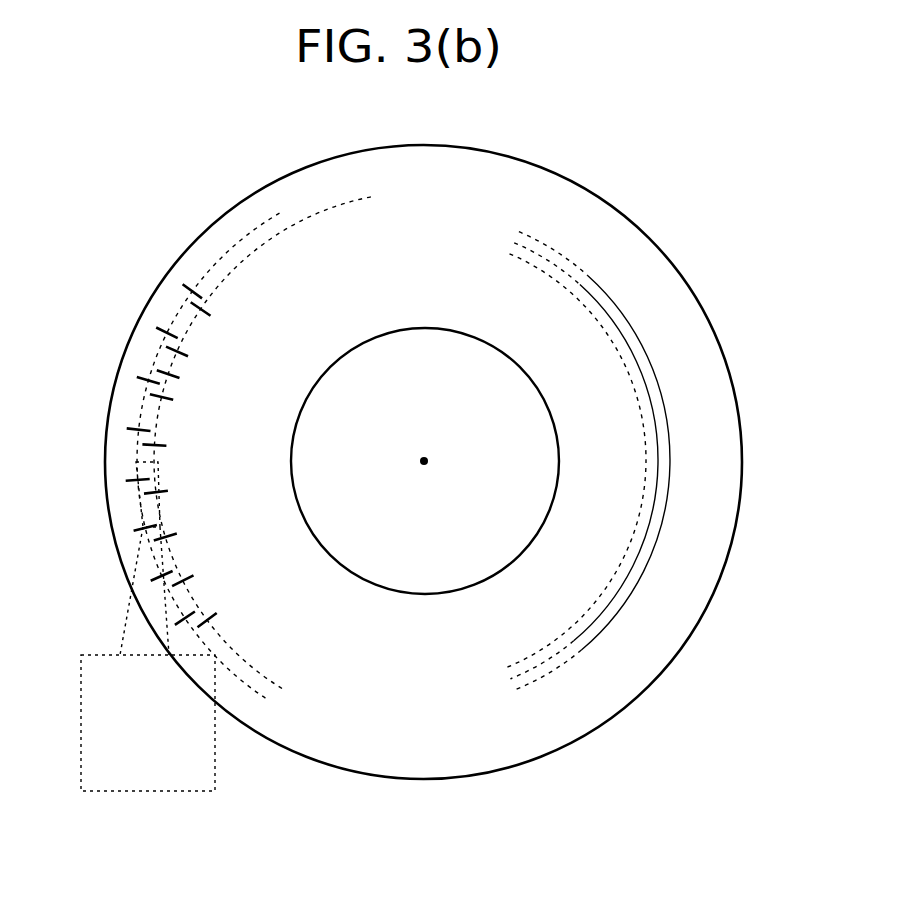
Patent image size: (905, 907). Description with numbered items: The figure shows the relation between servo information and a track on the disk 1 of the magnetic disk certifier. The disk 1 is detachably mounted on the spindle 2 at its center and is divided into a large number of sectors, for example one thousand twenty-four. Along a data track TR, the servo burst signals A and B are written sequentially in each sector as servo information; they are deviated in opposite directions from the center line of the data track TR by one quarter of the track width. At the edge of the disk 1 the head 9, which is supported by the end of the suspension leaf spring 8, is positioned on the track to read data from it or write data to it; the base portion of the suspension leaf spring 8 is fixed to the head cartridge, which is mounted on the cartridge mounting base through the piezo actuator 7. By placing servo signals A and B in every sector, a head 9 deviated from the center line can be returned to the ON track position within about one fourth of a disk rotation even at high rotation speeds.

The disk 1 is at (623, 234).
The spindle 2 is at (398, 583).
The piezo actuator 7 is at (148, 776).
The suspension leaf spring 8 is at (130, 620).
The head 9 is at (136, 462).
The data track TR is at (252, 237).
The servo burst signal A is at (188, 286).
The servo burst signal B is at (208, 313).